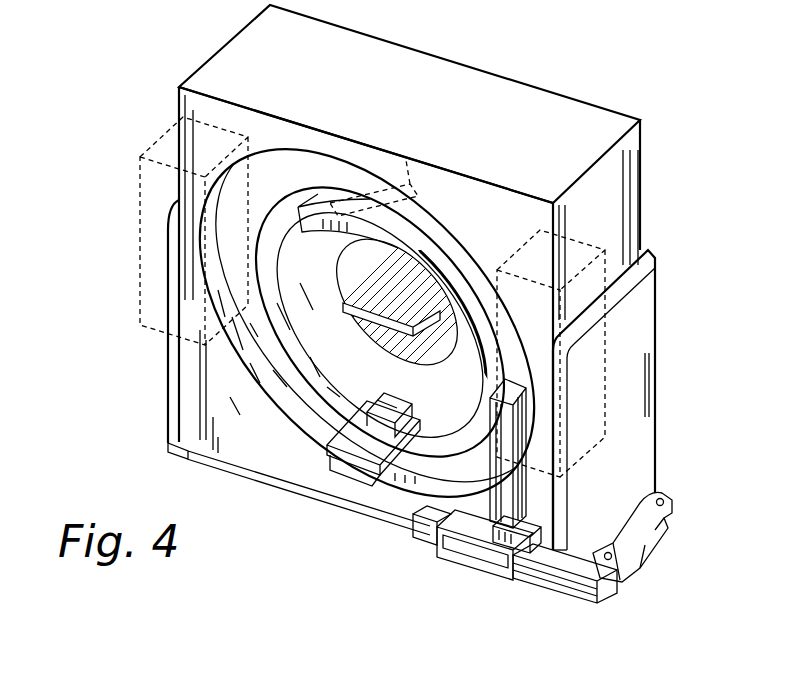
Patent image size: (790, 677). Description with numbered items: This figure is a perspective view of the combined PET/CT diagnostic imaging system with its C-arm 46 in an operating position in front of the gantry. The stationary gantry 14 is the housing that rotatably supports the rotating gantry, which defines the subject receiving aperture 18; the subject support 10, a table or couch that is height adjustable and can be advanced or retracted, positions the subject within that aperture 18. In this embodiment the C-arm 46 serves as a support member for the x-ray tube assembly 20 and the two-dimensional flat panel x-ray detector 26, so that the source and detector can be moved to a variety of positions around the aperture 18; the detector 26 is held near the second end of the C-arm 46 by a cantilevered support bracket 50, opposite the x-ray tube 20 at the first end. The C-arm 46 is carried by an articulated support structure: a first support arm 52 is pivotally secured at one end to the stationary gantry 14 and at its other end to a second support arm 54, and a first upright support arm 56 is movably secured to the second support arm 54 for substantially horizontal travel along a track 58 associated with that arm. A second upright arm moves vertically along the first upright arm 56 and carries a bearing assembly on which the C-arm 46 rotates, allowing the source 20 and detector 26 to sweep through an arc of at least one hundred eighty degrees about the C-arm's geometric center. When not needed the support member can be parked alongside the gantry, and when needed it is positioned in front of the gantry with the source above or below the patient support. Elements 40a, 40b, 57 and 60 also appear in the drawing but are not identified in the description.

The subject support 10 is at (383, 297).
The stationary gantry 14 is at (208, 399).
The subject receiving aperture 18 is at (416, 360).
The x-ray tube assembly 20 is at (364, 401).
The x-ray detector 26 is at (408, 150).
The first positioning unit 40a is at (140, 197).
The second positioning unit 40b is at (590, 233).
The C-arm 46 is at (420, 247).
The cantilevered support bracket 50 is at (337, 460).
The first support arm 52 is at (643, 547).
The second support arm 54 is at (557, 593).
The first upright support arm 56 is at (472, 560).
The rail end stub 57 is at (425, 540).
The track 58 is at (520, 465).
The column slide 60 is at (497, 432).